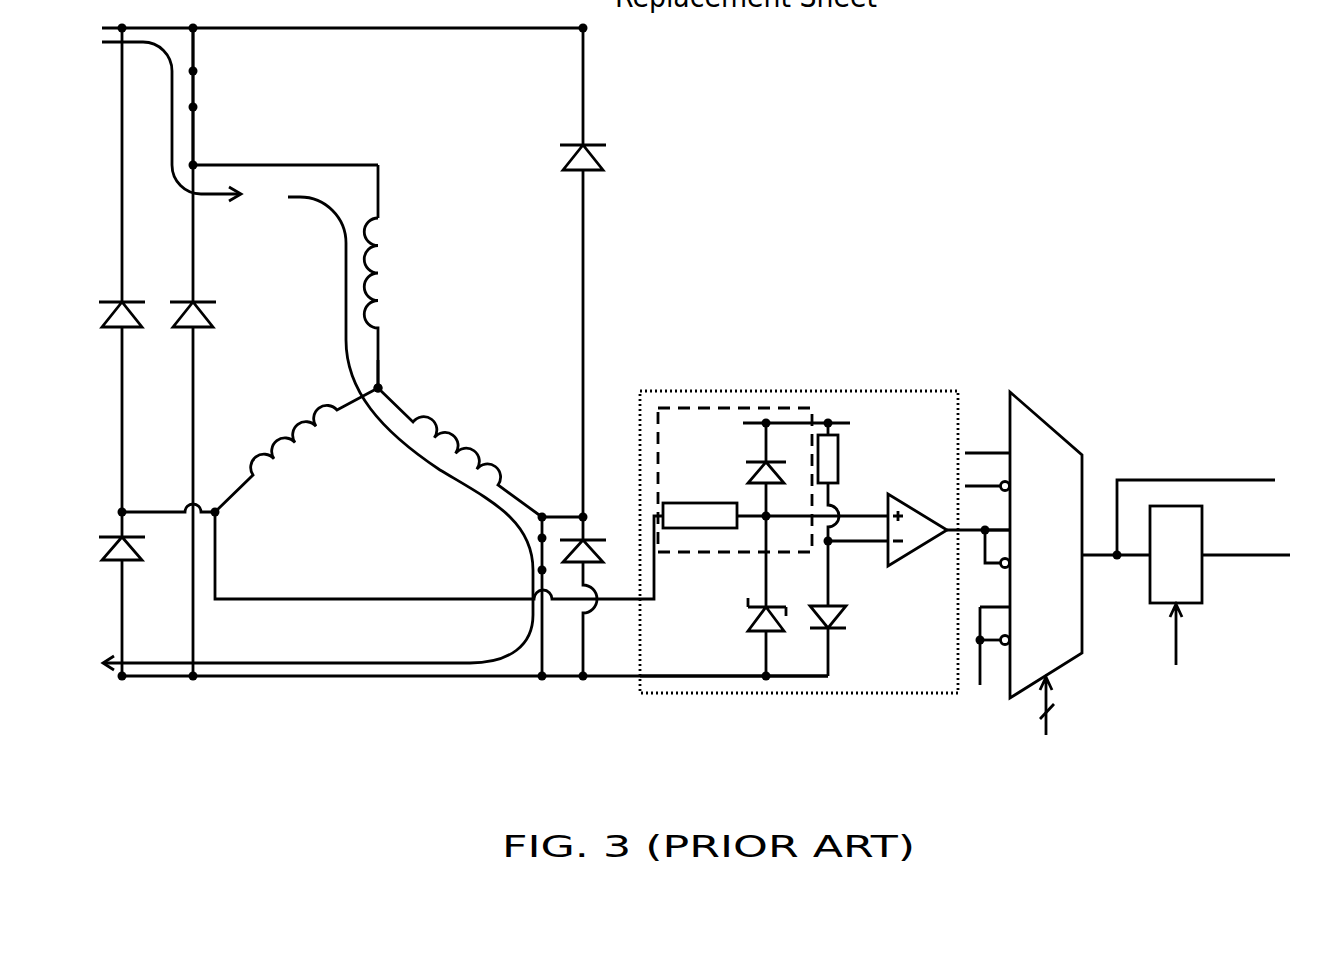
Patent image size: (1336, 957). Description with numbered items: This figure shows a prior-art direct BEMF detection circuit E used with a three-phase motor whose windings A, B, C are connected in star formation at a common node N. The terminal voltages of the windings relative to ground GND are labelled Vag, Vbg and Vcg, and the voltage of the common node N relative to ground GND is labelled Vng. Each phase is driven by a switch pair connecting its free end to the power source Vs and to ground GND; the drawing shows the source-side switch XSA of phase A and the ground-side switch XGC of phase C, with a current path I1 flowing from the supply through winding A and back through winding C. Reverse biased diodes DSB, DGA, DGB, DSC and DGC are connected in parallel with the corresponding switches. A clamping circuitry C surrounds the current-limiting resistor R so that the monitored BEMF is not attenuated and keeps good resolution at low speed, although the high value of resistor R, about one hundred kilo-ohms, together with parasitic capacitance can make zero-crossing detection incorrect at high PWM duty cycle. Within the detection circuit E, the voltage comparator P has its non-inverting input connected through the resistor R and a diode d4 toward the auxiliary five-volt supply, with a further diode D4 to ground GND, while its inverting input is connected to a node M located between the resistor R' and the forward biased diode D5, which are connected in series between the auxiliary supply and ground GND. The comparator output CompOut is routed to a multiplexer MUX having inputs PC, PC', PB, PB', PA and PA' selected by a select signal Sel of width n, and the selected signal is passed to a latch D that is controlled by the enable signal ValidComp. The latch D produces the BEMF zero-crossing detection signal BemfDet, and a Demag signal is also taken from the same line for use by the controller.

The power source Vs is at (603, 31).
The switch XSA is at (221, 96).
The recirculation current path I1 is at (317, 356).
The reverse biased diode DSB is at (134, 338).
The reverse biased diode DGA is at (208, 338).
The reverse biased diode DGB is at (135, 569).
The reverse biased diode DSC is at (611, 163).
The reverse biased diode DGC is at (589, 530).
The terminal voltage of winding B Vbg is at (191, 528).
The terminal voltage of winding A Vag is at (405, 191).
The winding A is at (393, 303).
The common node N is at (393, 362).
The voltage at the common node Vng is at (405, 385).
The winding B is at (296, 450).
The winding / clamping circuitry C is at (682, 338).
The terminal voltage of winding C Vcg is at (559, 501).
The switch XGC is at (511, 599).
The direct BEMF detection circuit E is at (791, 392).
The resistor R is at (775, 493).
The diode d4 is at (773, 468).
The resistor R' is at (845, 482).
The zener diode to ground D4 is at (774, 598).
The forward biased diode D5 is at (847, 608).
The ground GND is at (762, 669).
The node M is at (835, 547).
The voltage comparator P is at (917, 520).
The output of the comparator CompOut is at (973, 532).
The multiplexer MUX is at (1082, 474).
The multiplexer input PC is at (1006, 452).
The multiplexer inverted input PC' is at (1007, 489).
The multiplexer input PB is at (1015, 529).
The multiplexer inverted input PB' is at (1017, 555).
The multiplexer input PA is at (1014, 637).
The multiplexer inverted input PA' is at (1014, 639).
The multiplexer select signal Sel is at (1047, 728).
The select bus width n is at (1055, 721).
The latch D is at (1142, 554).
The demagnetization output Demag is at (1205, 493).
The BEMF ZCP detection signal BemfDet is at (1257, 533).
The enable signal ValidComp is at (1236, 635).